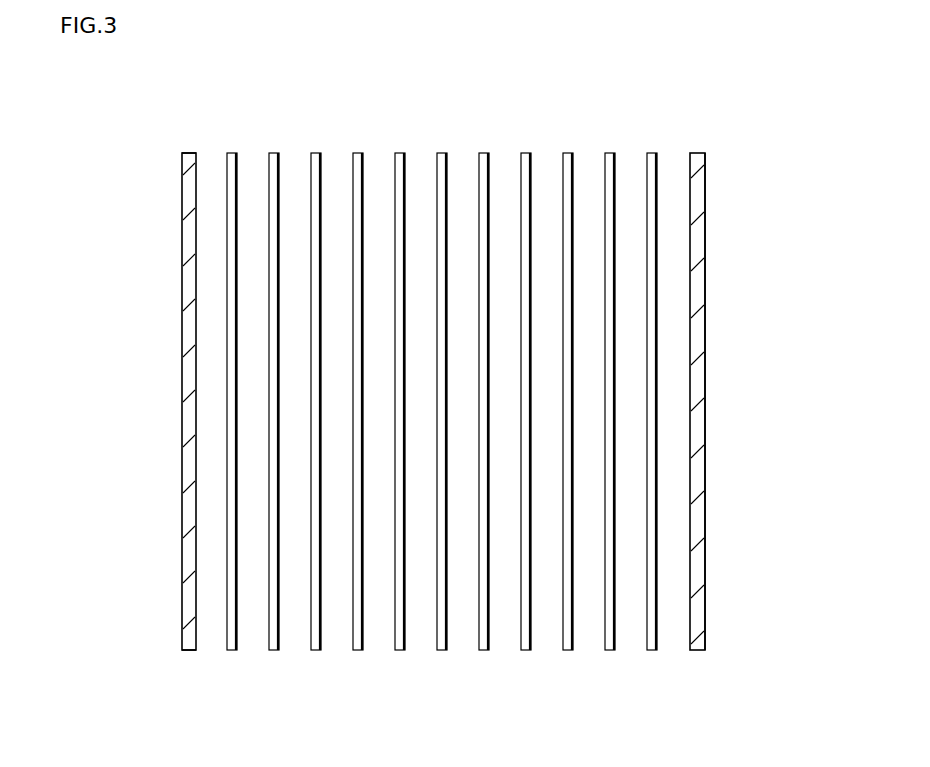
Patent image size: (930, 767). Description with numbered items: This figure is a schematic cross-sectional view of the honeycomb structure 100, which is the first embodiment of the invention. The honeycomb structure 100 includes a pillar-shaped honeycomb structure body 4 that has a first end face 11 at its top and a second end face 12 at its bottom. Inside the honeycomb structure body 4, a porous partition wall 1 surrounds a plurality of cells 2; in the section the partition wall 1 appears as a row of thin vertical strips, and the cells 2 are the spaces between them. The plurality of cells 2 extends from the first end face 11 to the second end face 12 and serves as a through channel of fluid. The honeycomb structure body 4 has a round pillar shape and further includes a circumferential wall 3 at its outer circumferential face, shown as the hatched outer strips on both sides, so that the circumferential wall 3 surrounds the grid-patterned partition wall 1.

The honeycomb structure 100 is at (784, 67).
The partition wall 1 is at (608, 178).
The cells 2 is at (543, 208).
The circumferential wall 3 is at (188, 303).
The honeycomb structure body 4 is at (718, 156).
The first end face 11 is at (203, 134).
The second end face 12 is at (215, 668).